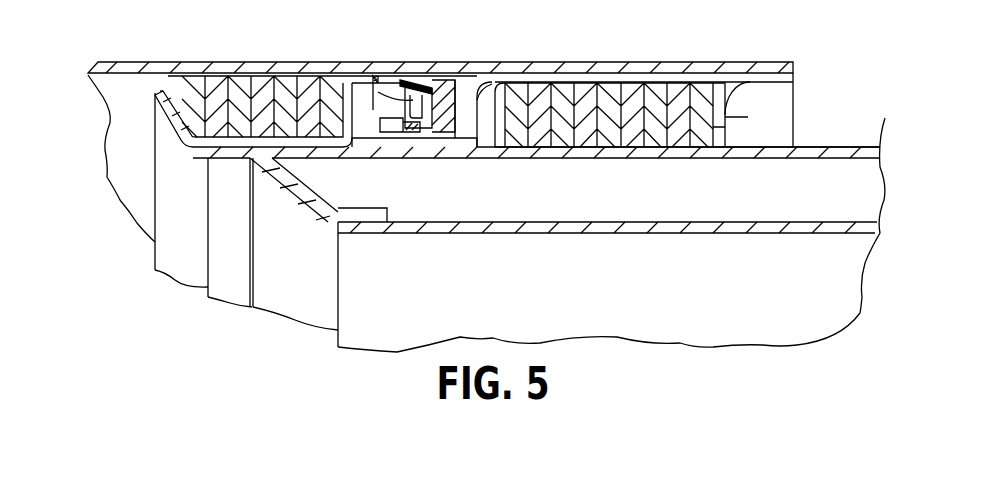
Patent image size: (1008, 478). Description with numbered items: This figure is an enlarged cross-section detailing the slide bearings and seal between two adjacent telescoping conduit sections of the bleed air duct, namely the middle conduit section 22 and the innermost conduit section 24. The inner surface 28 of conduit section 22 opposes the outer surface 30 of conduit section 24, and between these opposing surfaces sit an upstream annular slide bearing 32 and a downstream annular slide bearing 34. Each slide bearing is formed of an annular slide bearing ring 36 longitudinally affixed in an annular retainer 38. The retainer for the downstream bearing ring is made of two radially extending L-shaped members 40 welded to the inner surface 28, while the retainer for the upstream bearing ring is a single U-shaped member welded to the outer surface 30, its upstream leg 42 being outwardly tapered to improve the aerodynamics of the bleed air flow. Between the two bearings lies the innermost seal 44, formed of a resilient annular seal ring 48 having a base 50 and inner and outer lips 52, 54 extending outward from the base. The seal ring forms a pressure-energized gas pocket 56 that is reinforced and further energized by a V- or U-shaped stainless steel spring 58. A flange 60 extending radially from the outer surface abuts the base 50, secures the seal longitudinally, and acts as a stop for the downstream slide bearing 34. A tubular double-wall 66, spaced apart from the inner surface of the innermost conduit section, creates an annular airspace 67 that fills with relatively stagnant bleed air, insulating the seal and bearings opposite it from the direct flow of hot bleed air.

The conduit section 22 is at (746, 63).
The innermost conduit section 24 is at (662, 158).
The inner surface 28 is at (117, 75).
The outer surface 30 is at (846, 140).
The upstream annular slide bearing 32 is at (237, 117).
The downstream annular slide bearing 34 is at (597, 116).
The slide bearing ring 36 is at (195, 128).
The annular retainer 38 is at (170, 133).
The L-shaped member 40 is at (749, 86).
The upstream leg 42 is at (163, 115).
The innermost seal 44 is at (420, 73).
The seal ring 48 is at (440, 97).
The base 50 is at (478, 160).
The inner lip 52 is at (360, 147).
The outer lip 54 is at (373, 97).
The gas pocket 56 is at (400, 107).
The spring 58 is at (414, 133).
The flange 60 is at (478, 97).
The tubular double-wall 66 is at (803, 233).
The annular airspace 67 is at (853, 197).